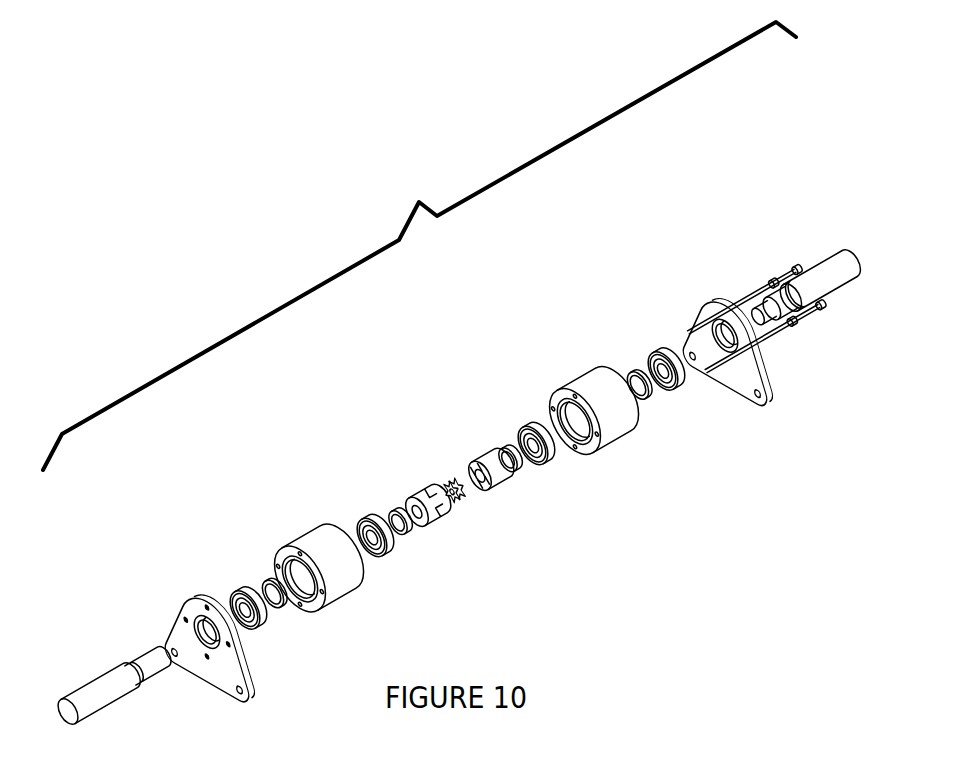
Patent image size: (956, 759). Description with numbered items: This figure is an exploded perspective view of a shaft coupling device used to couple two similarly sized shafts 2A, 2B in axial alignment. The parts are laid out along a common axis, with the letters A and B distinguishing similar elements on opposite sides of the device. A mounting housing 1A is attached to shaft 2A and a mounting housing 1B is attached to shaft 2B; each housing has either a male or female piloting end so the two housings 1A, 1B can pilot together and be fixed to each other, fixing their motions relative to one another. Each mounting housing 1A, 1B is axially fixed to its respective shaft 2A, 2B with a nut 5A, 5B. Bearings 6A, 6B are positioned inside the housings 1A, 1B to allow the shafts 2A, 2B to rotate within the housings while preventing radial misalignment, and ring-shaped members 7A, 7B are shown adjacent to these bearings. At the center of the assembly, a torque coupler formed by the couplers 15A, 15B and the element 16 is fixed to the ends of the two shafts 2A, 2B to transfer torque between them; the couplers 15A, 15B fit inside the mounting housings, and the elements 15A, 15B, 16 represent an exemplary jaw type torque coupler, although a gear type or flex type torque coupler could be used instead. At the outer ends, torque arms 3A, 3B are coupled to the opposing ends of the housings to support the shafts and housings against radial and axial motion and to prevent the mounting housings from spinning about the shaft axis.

The mounting housing 1A is at (580, 368).
The mounting housing 1B is at (290, 528).
The shaft 2A is at (808, 258).
The shaft 2B is at (106, 660).
The torque arm 3A is at (714, 288).
The torque arm 3B is at (177, 596).
The nut 5A is at (503, 431).
The nut 5B is at (378, 505).
The bearing 6A is at (531, 411).
The bearing 6B is at (225, 582).
The seal ring 7A is at (636, 364).
The seal ring 7B is at (257, 576).
The coupler 15A is at (476, 441).
The coupler 15B is at (407, 483).
The torque coupler element 16 is at (445, 465).